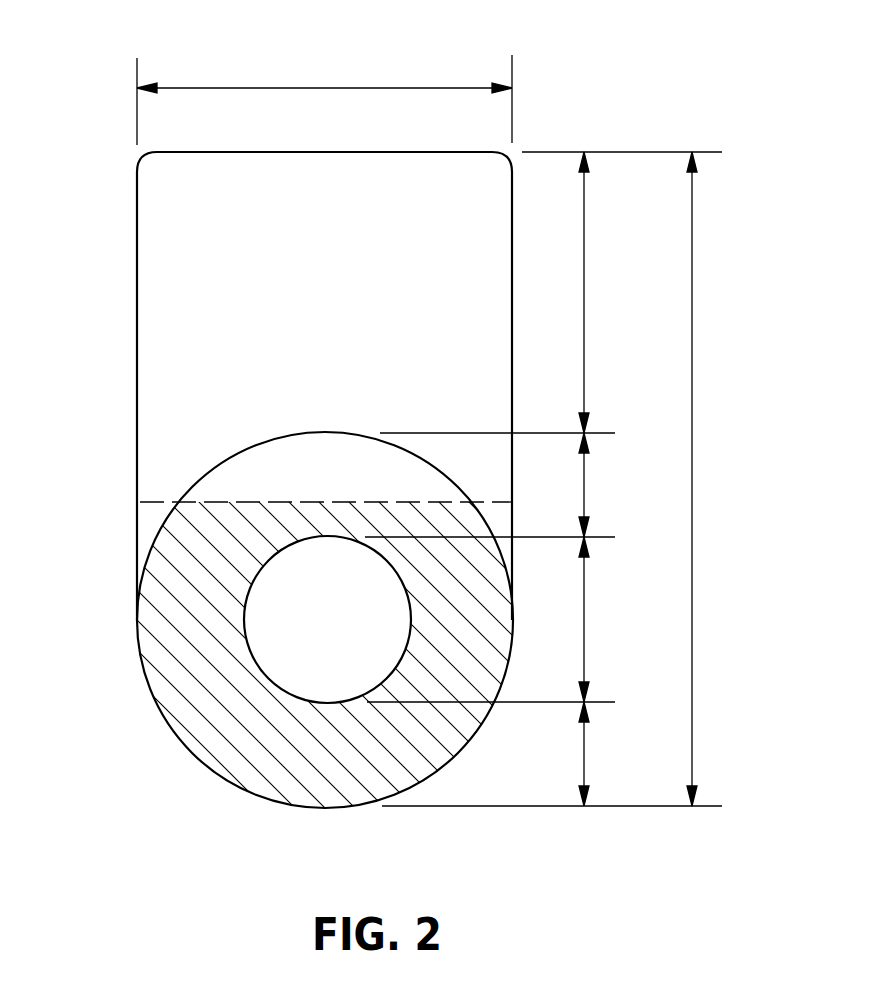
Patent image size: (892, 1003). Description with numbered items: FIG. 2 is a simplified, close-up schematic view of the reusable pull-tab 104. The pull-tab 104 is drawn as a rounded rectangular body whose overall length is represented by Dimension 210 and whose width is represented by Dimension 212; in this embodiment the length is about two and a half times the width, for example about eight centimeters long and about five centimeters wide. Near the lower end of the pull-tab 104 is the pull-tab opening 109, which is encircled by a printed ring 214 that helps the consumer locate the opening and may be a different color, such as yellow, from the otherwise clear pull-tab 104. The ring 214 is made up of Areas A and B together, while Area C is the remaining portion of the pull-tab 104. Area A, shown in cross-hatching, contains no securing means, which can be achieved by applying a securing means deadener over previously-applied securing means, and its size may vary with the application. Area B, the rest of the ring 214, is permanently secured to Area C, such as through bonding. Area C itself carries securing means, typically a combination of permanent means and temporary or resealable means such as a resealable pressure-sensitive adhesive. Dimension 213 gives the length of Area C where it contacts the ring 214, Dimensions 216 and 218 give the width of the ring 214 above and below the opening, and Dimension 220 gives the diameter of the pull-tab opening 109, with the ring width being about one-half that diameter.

The pull-tab 104 is at (404, 424).
The pull-tab opening 109 is at (292, 673).
The Dimension 212 is at (327, 86).
The Dimension 213 is at (588, 290).
The printed ring 214 is at (266, 445).
The Dimension 216 is at (588, 487).
The Dimension 220 is at (588, 617).
The Dimension 218 is at (588, 753).
The Dimension 210 is at (697, 477).
The Area A is at (200, 628).
The Area B is at (222, 485).
The Area C is at (163, 294).